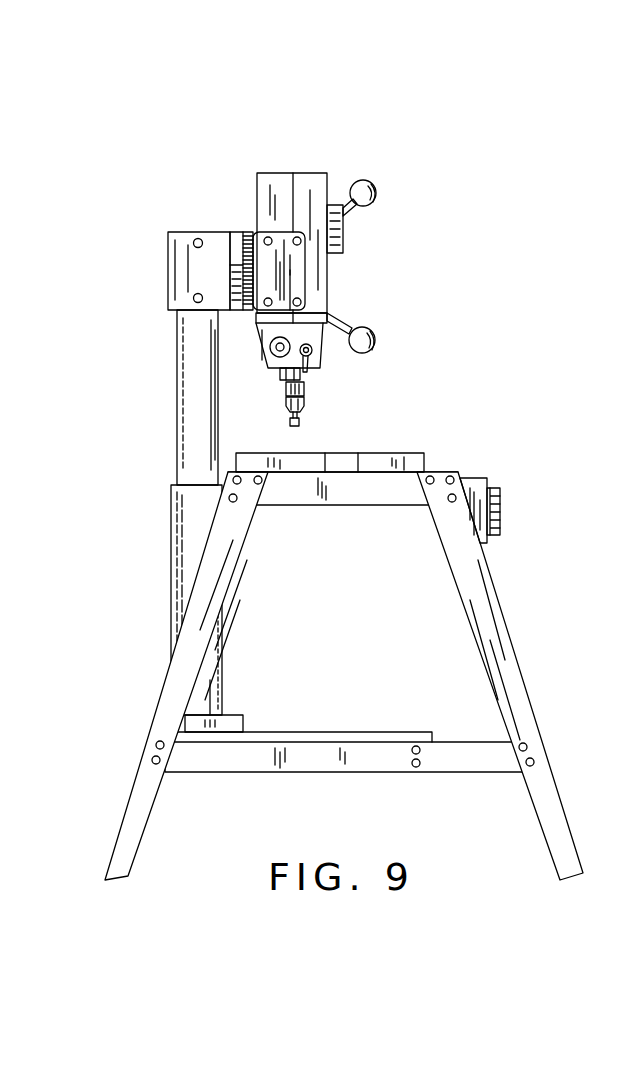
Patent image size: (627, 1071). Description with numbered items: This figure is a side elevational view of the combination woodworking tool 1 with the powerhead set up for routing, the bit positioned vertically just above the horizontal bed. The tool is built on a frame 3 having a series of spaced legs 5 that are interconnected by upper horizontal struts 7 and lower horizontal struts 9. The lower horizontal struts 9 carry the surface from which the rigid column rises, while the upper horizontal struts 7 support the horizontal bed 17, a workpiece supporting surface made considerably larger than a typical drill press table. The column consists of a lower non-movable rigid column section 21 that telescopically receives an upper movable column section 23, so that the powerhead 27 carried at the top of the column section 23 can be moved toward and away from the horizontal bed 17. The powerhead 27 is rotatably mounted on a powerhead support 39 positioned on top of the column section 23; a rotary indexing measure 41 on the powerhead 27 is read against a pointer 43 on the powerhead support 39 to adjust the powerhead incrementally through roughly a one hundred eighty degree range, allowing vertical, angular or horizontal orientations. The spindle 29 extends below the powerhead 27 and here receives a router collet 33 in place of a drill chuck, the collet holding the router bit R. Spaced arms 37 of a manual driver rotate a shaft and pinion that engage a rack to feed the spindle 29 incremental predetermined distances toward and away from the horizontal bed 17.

The combination woodworking tool 1 is at (402, 208).
The frame 3 is at (302, 772).
The legs 5 is at (169, 697).
The upper horizontal struts 7 is at (388, 488).
The lower horizontal struts 9 is at (385, 758).
The horizontal bed 17 is at (397, 453).
The lower non-movable rigid column section 21 is at (192, 515).
The upper movable column section 23 is at (193, 355).
The powerhead 27 is at (328, 287).
The spindle 29 is at (303, 383).
The router collet 33 is at (305, 399).
The spaced arms 37 is at (340, 205).
The powerhead support 39 is at (202, 268).
The rotary indexing measure 41 is at (247, 232).
The pointer 43 is at (238, 265).
The router bit R is at (297, 426).